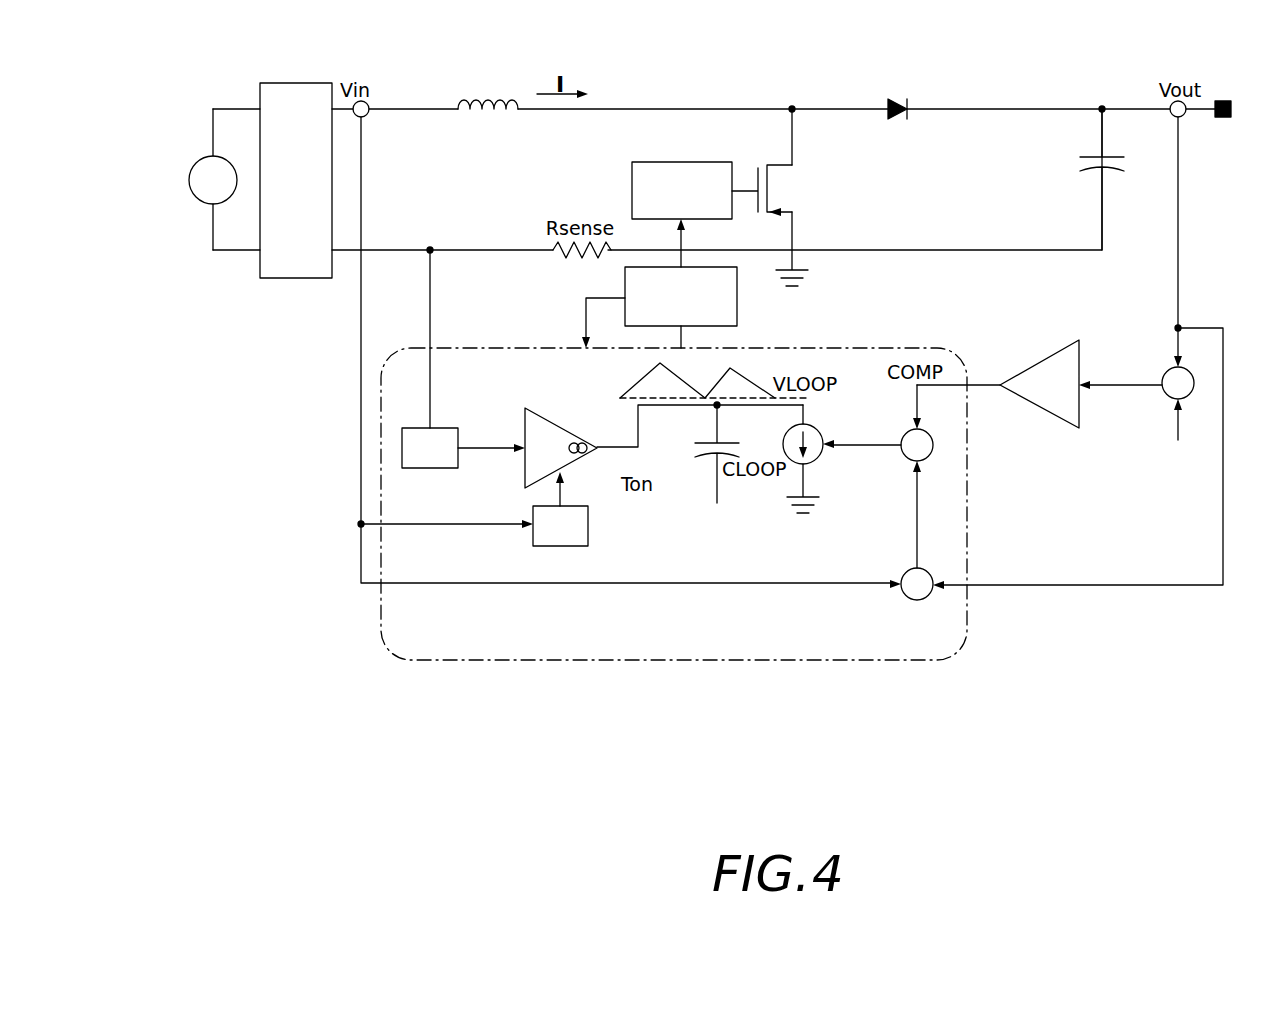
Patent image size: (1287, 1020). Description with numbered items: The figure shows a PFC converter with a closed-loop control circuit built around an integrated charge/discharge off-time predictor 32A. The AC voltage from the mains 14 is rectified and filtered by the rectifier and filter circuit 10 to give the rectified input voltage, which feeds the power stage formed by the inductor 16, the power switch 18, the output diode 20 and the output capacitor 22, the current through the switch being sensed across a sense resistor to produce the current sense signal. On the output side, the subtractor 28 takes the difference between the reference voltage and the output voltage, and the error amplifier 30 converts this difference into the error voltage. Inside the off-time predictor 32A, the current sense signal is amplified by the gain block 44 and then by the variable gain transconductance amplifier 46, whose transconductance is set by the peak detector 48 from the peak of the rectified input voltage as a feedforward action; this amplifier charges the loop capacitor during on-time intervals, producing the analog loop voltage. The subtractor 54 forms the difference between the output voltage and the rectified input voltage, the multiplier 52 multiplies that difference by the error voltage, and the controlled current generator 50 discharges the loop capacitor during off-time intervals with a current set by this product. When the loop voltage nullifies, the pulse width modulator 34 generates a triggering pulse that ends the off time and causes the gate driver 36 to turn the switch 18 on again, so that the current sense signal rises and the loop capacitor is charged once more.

The rectifier and filter circuit 10 is at (297, 83).
The mains 14 is at (189, 180).
The inductor 16 is at (485, 100).
The power switch 18 is at (781, 165).
The output diode 20 is at (900, 101).
The output capacitor 22 is at (1108, 157).
The subtractor 28 is at (1165, 371).
The error amplifier 30 is at (1037, 356).
The charge/discharge off-time predictor 32A is at (865, 348).
The pulse width modulator 34 is at (737, 296).
The gate driver 36 is at (685, 162).
The gain block 44 is at (440, 428).
The variable gain transconductance amplifier 46 is at (561, 427).
The peak detector 48 is at (588, 526).
The controlled current generator 50 is at (819, 434).
The multiplier 52 is at (906, 458).
The subtractor 54 is at (905, 597).